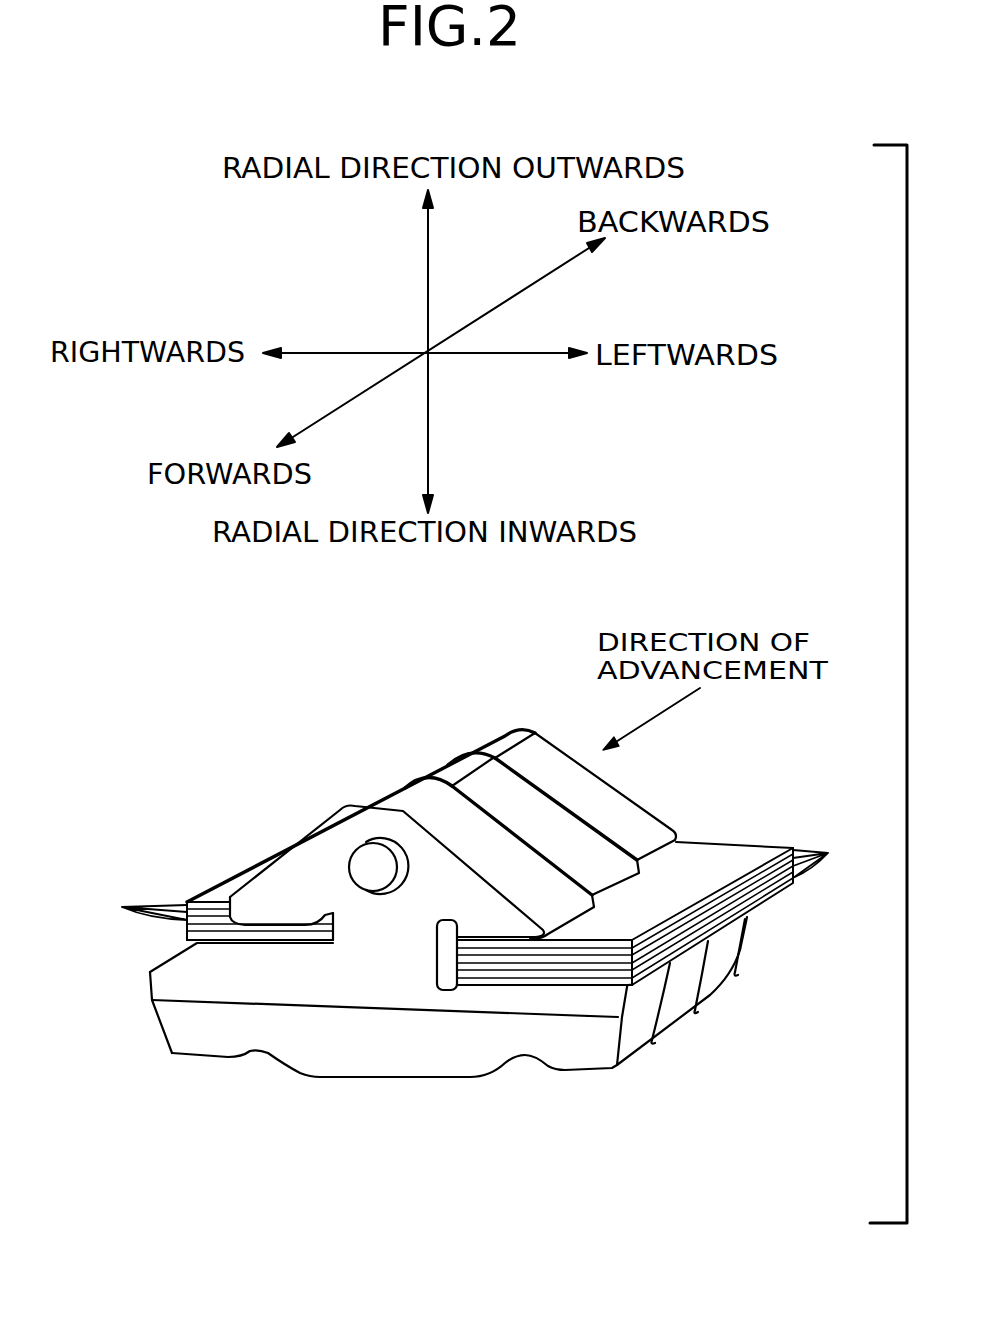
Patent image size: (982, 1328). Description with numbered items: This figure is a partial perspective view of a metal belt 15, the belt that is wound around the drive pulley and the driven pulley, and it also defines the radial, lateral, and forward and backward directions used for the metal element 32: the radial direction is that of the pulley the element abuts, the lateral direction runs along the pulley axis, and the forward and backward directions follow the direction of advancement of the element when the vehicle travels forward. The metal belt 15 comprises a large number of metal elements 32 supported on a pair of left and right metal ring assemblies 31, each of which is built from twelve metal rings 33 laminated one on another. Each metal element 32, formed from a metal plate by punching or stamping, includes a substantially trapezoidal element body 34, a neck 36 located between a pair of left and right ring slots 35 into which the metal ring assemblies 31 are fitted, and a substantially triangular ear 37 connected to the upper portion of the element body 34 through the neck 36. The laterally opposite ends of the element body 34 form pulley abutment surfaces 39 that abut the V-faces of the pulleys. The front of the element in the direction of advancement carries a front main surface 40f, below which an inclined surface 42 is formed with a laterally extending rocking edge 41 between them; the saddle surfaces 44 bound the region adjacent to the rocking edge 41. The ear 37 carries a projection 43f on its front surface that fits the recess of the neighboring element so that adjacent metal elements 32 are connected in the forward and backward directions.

The metal belt 15 is at (431, 828).
The metal ring assembly 31 is at (204, 880).
The metal element 32 is at (418, 1068).
The metal ring 33 is at (476, 882).
The element body 34 is at (187, 1040).
The ring slot 35 is at (453, 982).
The neck 36 is at (385, 980).
The ear 37 is at (313, 873).
The pulley abutment surface 39 is at (635, 1035).
The front main surface 40f is at (412, 952).
The rocking edge 41 is at (295, 1007).
The inclined surface 42 is at (410, 1070).
The projection 43f is at (368, 864).
The saddle surface 44 is at (237, 953).